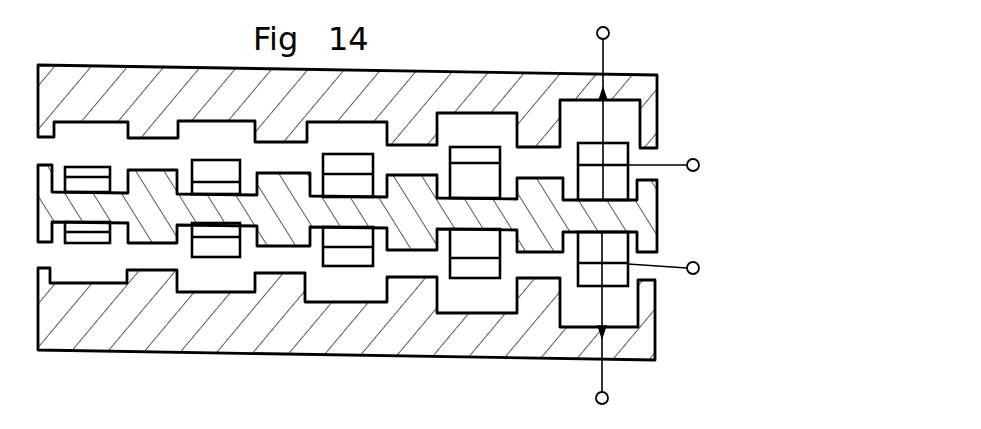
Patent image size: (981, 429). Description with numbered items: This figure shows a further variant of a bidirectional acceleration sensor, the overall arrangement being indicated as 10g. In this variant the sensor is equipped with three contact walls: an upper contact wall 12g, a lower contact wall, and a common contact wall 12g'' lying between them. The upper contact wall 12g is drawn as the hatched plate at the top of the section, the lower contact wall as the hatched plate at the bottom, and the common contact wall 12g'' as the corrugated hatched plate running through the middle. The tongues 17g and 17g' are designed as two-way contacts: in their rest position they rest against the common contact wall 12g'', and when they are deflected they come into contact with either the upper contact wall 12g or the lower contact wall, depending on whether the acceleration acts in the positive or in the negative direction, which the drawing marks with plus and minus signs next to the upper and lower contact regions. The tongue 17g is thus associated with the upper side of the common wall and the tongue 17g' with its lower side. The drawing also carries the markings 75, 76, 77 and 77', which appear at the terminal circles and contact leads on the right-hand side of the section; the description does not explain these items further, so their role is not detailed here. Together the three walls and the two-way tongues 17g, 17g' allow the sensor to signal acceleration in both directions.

The electrostatic actuator assembly 10g is at (757, 173).
The upper contact wall 12g is at (347, 85).
The common contact wall 12g'' is at (397, 210).
The tongue 17g is at (407, 168).
The tongue 17g' is at (406, 299).
The positive supply terminal 75 is at (605, 52).
The negative supply terminal 76 is at (604, 378).
The upper contact terminal 77 is at (679, 128).
The lower contact terminal 77' is at (698, 295).